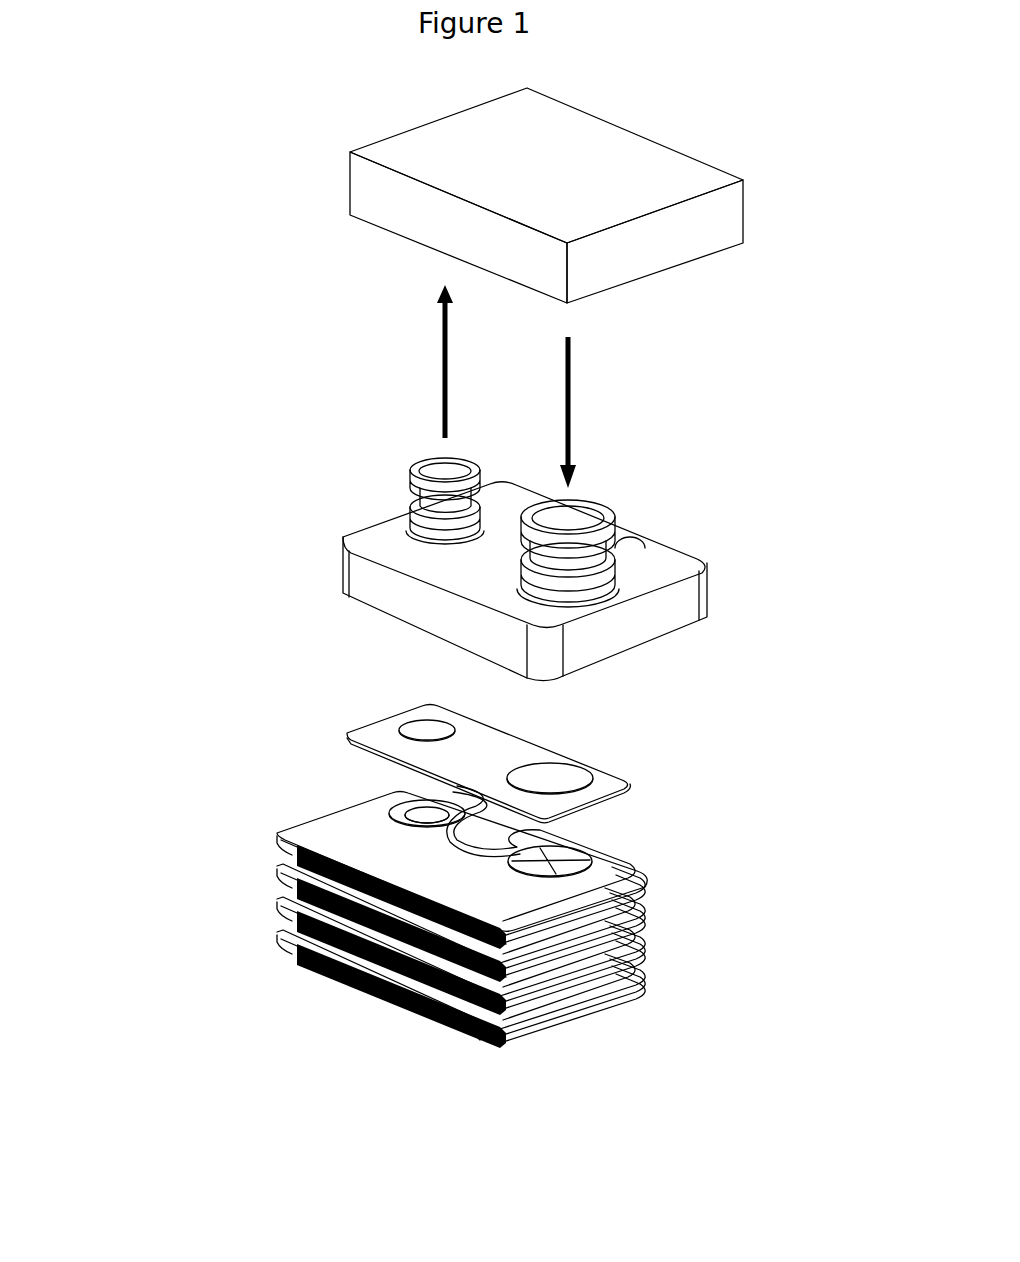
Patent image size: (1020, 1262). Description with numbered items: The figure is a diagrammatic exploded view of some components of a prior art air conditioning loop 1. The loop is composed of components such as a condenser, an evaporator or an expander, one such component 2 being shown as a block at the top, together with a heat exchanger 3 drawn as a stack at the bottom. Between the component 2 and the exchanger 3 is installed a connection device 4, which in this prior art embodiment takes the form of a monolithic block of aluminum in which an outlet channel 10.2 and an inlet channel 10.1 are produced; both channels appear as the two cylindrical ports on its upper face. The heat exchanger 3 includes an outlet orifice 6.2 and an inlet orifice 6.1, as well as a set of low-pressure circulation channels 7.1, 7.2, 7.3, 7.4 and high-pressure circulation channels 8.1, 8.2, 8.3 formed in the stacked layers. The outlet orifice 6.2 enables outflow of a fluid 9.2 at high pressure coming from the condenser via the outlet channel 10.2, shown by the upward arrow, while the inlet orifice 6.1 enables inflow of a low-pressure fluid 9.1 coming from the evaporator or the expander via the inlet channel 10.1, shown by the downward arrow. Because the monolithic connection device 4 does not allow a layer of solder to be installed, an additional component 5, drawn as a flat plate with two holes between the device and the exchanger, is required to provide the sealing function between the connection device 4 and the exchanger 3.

The air conditioning loop 1 is at (146, 402).
The component 2 is at (780, 197).
The heat exchanger 3 is at (684, 926).
The connection device 4 is at (705, 530).
The additional component 5 is at (360, 737).
The inlet orifice 6.1 is at (548, 866).
The outlet orifice 6.2 is at (410, 810).
The low-pressure circulation channel 7.1 is at (461, 841).
The low-pressure circulation channel 7.2 is at (277, 874).
The low-pressure circulation channel 7.3 is at (277, 907).
The low-pressure circulation channel 7.4 is at (277, 940).
The high-pressure circulation channel 8.1 is at (503, 938).
The high-pressure circulation channel 8.2 is at (513, 965).
The high-pressure circulation channel 8.3 is at (476, 1024).
The low-pressure fluid 9.1 is at (572, 386).
The high-pressure fluid 9.2 is at (442, 366).
The inlet channel 10.1 is at (590, 518).
The outlet channel 10.2 is at (425, 462).